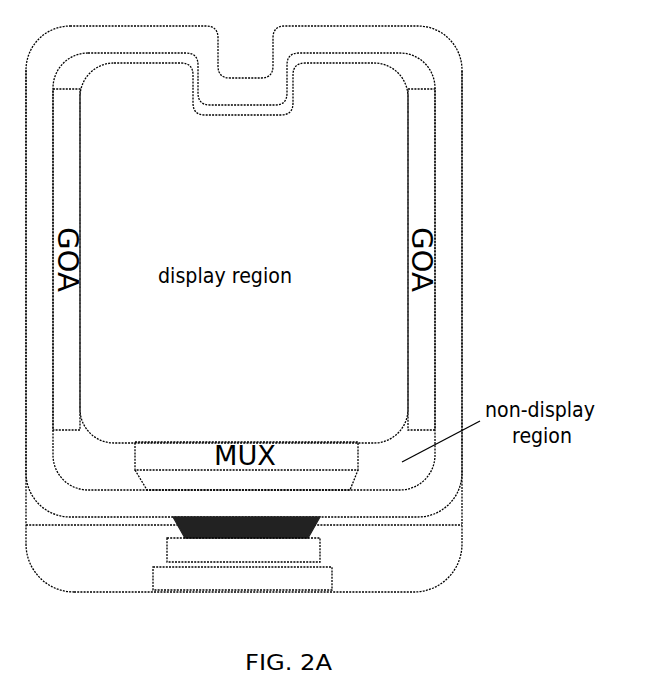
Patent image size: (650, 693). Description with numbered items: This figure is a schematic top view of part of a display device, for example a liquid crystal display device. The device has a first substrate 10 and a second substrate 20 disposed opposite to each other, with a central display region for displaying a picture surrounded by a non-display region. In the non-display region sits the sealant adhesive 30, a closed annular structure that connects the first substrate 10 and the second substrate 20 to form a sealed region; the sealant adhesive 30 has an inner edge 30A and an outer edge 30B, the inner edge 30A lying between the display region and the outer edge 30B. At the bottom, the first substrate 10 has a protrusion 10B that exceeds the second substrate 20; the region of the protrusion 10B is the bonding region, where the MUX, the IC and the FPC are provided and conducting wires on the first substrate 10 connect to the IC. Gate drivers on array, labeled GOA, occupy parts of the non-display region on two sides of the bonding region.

The sealant adhesive 30 is at (448, 162).
The inner edge 30A is at (425, 477).
The outer edge 30B is at (447, 502).
The second substrate 20 is at (437, 527).
The first substrate 10 is at (443, 582).
The protrusion 10B is at (102, 575).